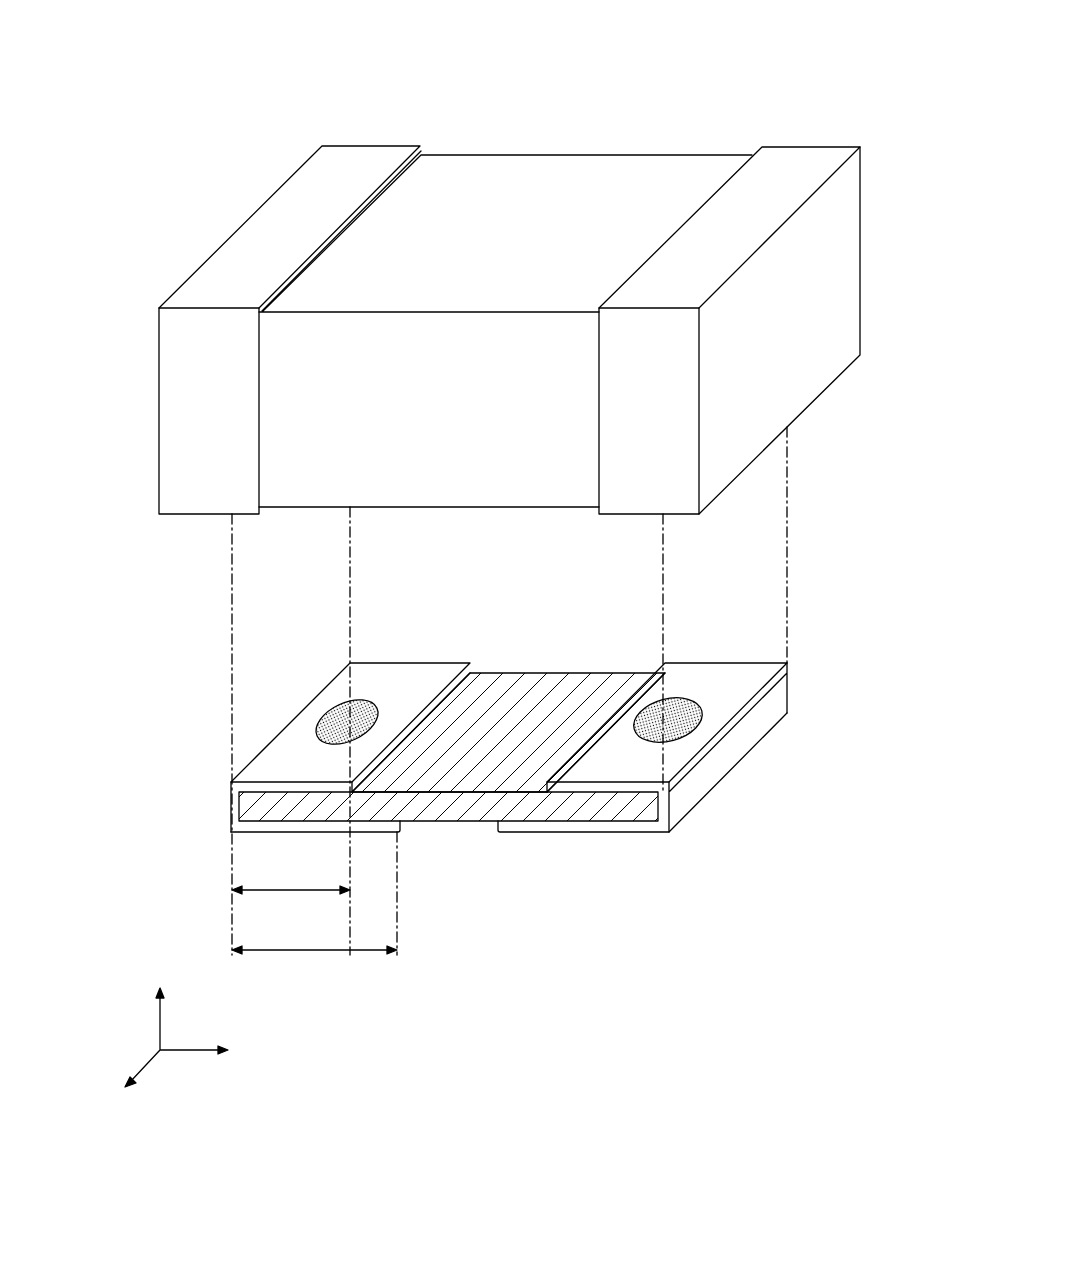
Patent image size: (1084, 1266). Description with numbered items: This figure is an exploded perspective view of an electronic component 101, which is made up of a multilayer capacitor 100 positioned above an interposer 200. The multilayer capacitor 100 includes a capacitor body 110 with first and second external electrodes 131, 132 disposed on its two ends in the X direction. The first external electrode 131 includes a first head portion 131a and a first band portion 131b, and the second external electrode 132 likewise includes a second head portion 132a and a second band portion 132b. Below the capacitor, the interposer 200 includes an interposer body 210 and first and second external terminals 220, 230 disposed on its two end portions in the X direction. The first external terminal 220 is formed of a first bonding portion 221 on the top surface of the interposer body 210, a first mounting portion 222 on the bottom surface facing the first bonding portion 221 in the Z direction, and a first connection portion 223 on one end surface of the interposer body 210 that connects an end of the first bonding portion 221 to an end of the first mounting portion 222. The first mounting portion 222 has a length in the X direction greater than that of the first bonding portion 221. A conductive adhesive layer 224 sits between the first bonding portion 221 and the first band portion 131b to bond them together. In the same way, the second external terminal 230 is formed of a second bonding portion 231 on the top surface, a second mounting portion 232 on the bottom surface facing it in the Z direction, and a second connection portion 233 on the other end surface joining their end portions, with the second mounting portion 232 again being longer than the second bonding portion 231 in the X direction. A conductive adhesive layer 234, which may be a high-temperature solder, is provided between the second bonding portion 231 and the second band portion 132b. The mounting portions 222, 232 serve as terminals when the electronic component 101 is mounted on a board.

The electronic component 101 is at (528, 24).
The multilayer capacitor 100 is at (205, 238).
The capacitor body 110 is at (565, 170).
The first external electrode 131 is at (357, 80).
The first head portion 131a is at (293, 190).
The first band portion 131b is at (354, 158).
The second external electrode 132 is at (877, 80).
The second head portion 132a is at (862, 207).
The second band portion 132b is at (816, 162).
The interposer 200 is at (246, 740).
The interposer body 210 is at (478, 822).
The first external terminal 220 is at (152, 712).
The first bonding portion 221 is at (230, 780).
The first mounting portion 222 is at (290, 832).
The first connection portion 223 is at (230, 805).
The conductive adhesive layer 224 is at (340, 712).
The second external terminal 230 is at (845, 707).
The second bonding portion 231 is at (690, 745).
The second mounting portion 232 is at (598, 833).
The second connection portion 233 is at (690, 780).
The conductive adhesive layer 234 is at (682, 705).